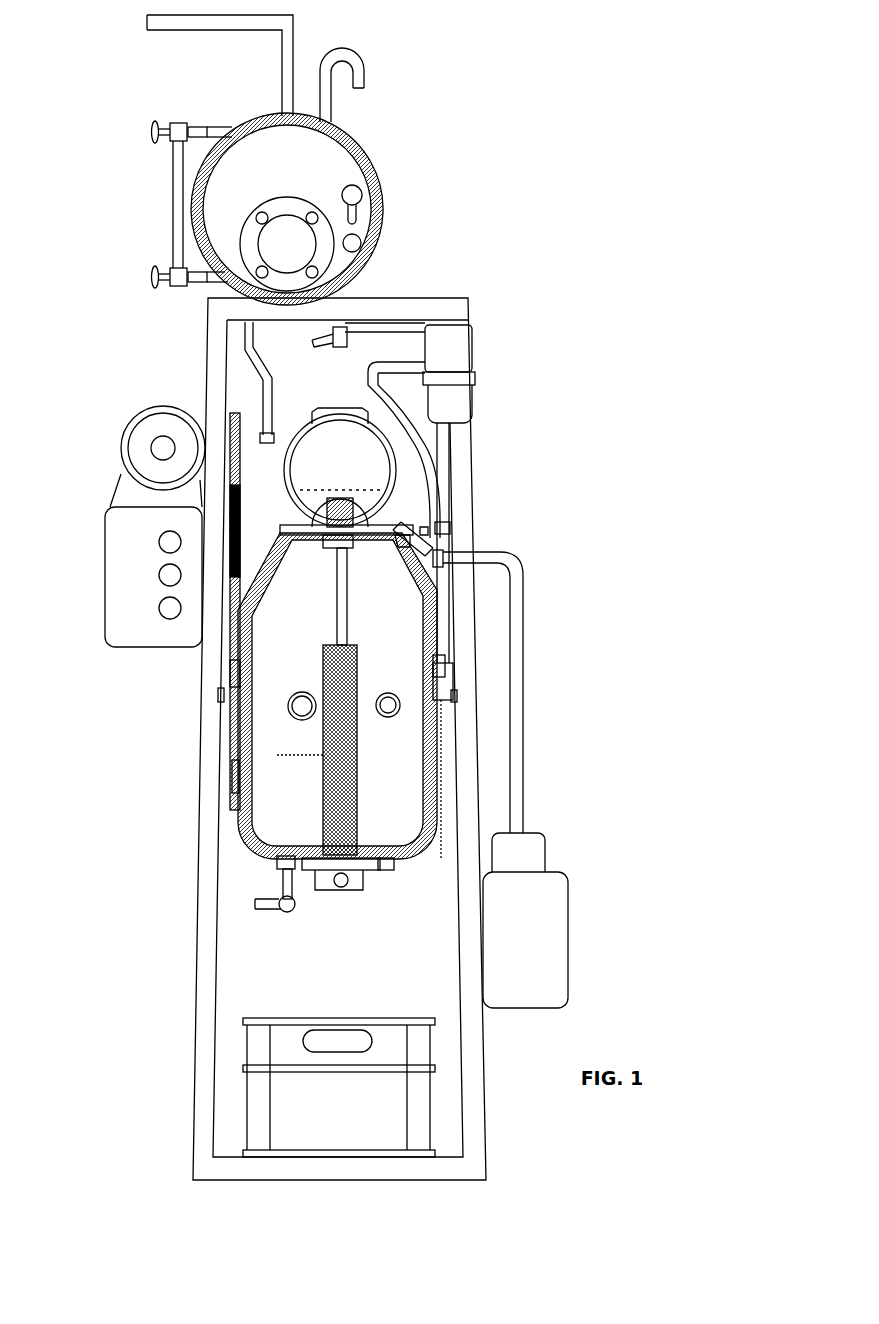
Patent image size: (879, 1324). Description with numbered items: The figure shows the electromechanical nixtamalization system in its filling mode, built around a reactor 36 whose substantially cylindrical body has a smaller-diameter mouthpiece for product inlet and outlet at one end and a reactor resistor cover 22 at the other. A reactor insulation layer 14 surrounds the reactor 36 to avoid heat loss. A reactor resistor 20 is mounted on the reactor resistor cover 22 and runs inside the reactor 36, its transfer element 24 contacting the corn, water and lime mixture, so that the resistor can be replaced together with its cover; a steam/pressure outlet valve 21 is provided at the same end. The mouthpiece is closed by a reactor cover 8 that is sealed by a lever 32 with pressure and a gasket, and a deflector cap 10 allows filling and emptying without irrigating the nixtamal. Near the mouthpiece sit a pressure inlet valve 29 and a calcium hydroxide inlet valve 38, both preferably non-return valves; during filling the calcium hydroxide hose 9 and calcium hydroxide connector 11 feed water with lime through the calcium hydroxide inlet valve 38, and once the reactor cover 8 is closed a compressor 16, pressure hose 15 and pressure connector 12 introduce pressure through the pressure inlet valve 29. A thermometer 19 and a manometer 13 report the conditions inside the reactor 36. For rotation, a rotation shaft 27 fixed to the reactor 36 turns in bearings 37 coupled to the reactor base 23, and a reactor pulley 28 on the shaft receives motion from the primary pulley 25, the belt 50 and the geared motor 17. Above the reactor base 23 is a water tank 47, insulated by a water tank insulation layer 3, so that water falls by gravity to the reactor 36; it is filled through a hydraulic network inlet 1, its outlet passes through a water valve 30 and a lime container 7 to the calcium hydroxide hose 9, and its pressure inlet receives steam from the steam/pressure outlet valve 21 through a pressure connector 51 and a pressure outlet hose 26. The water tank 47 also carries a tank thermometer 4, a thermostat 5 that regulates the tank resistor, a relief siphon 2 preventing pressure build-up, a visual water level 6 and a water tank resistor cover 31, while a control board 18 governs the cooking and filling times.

The hydraulic network inlet 1 is at (145, 28).
The relief siphon 2 is at (372, 60).
The water tank insulation layer 3 is at (372, 155).
The tank thermometer 4 is at (365, 195).
The thermostat 5 is at (363, 243).
The visual water level 6 is at (170, 212).
The lime container 7 is at (478, 350).
The reactor cover 8 is at (352, 455).
The calcium hydroxide hose 9 is at (441, 468).
The deflector cap 10 is at (268, 502).
The calcium hydroxide connector 11 is at (452, 527).
The pressure connector 12 is at (445, 553).
The manometer 13 is at (405, 702).
The reactor insulation layer 14 is at (438, 745).
The pressure hose 15 is at (537, 825).
The compressor 16 is at (550, 912).
The geared motor 17 is at (116, 423).
The control board 18 is at (99, 548).
The thermometer 19 is at (277, 706).
The reactor resistor 20 is at (277, 755).
The steam/pressure outlet valve 21 is at (279, 893).
The reactor resistor cover 22 is at (346, 897).
The reactor base 23 is at (192, 1120).
The transfer element 24 is at (363, 649).
The primary pulley 25 is at (227, 422).
The pressure outlet hose 26 is at (274, 406).
The rotation shaft 27 is at (446, 679).
The reactor pulley 28 is at (238, 774).
The pressure inlet valve 29 is at (450, 593).
The water valve 30 is at (332, 345).
The water tank resistor cover 31 is at (300, 254).
The lever 32 is at (343, 593).
The reactor 36 is at (410, 881).
The bearings 37 is at (456, 696).
The calcium hydroxide inlet valve 38 is at (386, 560).
The water tank 47 is at (517, 129).
The belt 50 is at (228, 543).
The pressure connector 51 is at (258, 434).